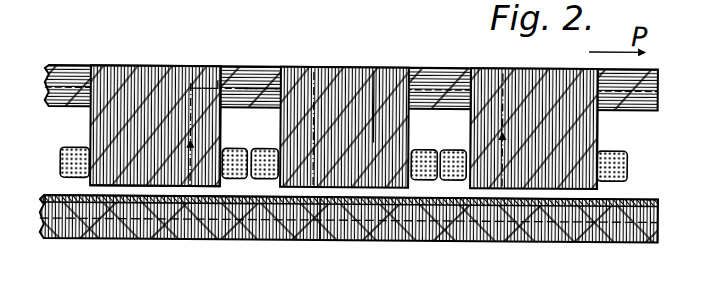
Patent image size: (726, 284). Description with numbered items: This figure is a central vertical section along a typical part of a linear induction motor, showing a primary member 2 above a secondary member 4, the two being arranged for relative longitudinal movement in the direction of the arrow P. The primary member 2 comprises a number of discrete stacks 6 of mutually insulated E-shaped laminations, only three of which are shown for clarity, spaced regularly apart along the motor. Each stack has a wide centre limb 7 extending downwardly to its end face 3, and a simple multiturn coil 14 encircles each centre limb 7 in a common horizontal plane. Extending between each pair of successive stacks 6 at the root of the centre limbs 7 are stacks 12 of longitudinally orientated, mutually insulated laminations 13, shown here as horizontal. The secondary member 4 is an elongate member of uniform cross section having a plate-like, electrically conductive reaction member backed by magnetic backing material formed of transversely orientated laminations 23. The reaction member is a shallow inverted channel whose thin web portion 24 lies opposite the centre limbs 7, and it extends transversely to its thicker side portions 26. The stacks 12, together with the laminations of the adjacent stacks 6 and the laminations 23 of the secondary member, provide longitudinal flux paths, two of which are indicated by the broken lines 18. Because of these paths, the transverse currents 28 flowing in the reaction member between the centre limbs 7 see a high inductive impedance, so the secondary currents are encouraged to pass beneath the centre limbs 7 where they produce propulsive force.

The primary member 2 is at (518, 64).
The end faces 3 is at (320, 196).
The secondary member 4 is at (524, 242).
The stacks of laminations 6 is at (135, 44).
The centre limbs 7 is at (92, 182).
The stacks of longitudinally orientated laminations 12 is at (229, 71).
The longitudinal laminations 13 is at (262, 80).
The multiturn coils 14 is at (70, 146).
The longitudinal flux paths 18 is at (372, 95).
The magnetic laminations 23 is at (139, 243).
The web portion 24 is at (92, 240).
The side portions 26 is at (246, 8).
The transverse currents 28 is at (220, 240).